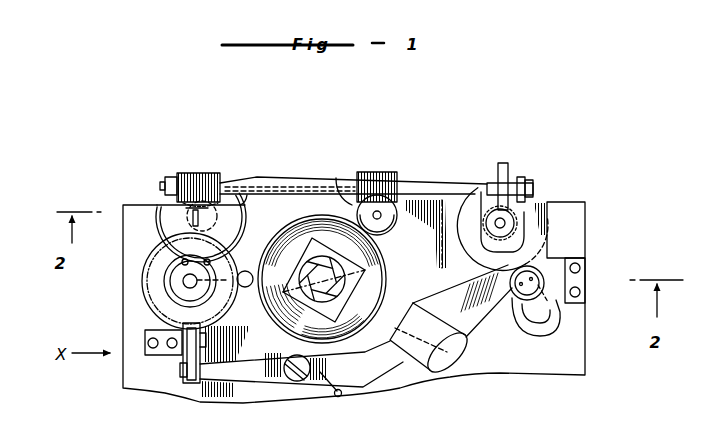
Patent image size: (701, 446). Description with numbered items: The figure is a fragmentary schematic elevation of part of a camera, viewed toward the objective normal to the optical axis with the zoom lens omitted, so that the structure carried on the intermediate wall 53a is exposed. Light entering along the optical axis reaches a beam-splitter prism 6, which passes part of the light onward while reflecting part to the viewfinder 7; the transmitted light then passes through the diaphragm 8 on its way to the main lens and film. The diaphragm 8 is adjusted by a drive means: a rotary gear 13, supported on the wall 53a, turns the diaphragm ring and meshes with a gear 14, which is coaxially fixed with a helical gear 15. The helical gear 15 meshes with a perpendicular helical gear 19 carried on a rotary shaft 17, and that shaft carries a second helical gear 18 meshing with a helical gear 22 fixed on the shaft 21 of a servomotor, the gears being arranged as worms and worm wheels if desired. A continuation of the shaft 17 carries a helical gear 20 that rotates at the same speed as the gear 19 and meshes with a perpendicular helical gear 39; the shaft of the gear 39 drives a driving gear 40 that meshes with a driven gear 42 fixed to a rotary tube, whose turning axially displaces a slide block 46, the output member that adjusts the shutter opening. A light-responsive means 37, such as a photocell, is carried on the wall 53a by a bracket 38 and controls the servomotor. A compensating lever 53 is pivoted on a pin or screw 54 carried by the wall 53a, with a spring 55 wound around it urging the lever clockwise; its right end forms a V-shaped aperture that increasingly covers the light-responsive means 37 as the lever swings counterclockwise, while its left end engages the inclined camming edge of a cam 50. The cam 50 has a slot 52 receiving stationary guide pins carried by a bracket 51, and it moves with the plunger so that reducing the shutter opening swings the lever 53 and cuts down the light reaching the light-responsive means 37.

The beam-splitter prism 6 is at (296, 297).
The viewfinder 7 is at (412, 350).
The diaphragm 8 is at (334, 300).
The rotary gear 13 is at (301, 214).
The gear 14 is at (351, 206).
The helical gear 15 is at (394, 177).
The rotary shaft 17 is at (433, 184).
The second helical gear 18 is at (503, 163).
The helical gear 19 is at (377, 172).
The helical gear 20 is at (209, 175).
The servomotor shaft 21 is at (513, 175).
The helical gear 22 is at (514, 221).
The light-responsive means 37 is at (529, 268).
The bracket 38 is at (548, 278).
The helical gear 39 is at (188, 212).
The driving gear 40 is at (153, 224).
The driven gear 42 is at (190, 280).
The slide block 46 is at (143, 297).
The cam 50 is at (192, 382).
The bracket 51 is at (163, 356).
The slot 52 is at (204, 340).
The compensating lever 53 is at (238, 374).
The intermediate wall 53a is at (532, 366).
The pin or screw 54 is at (293, 380).
The spring 55 is at (323, 376).